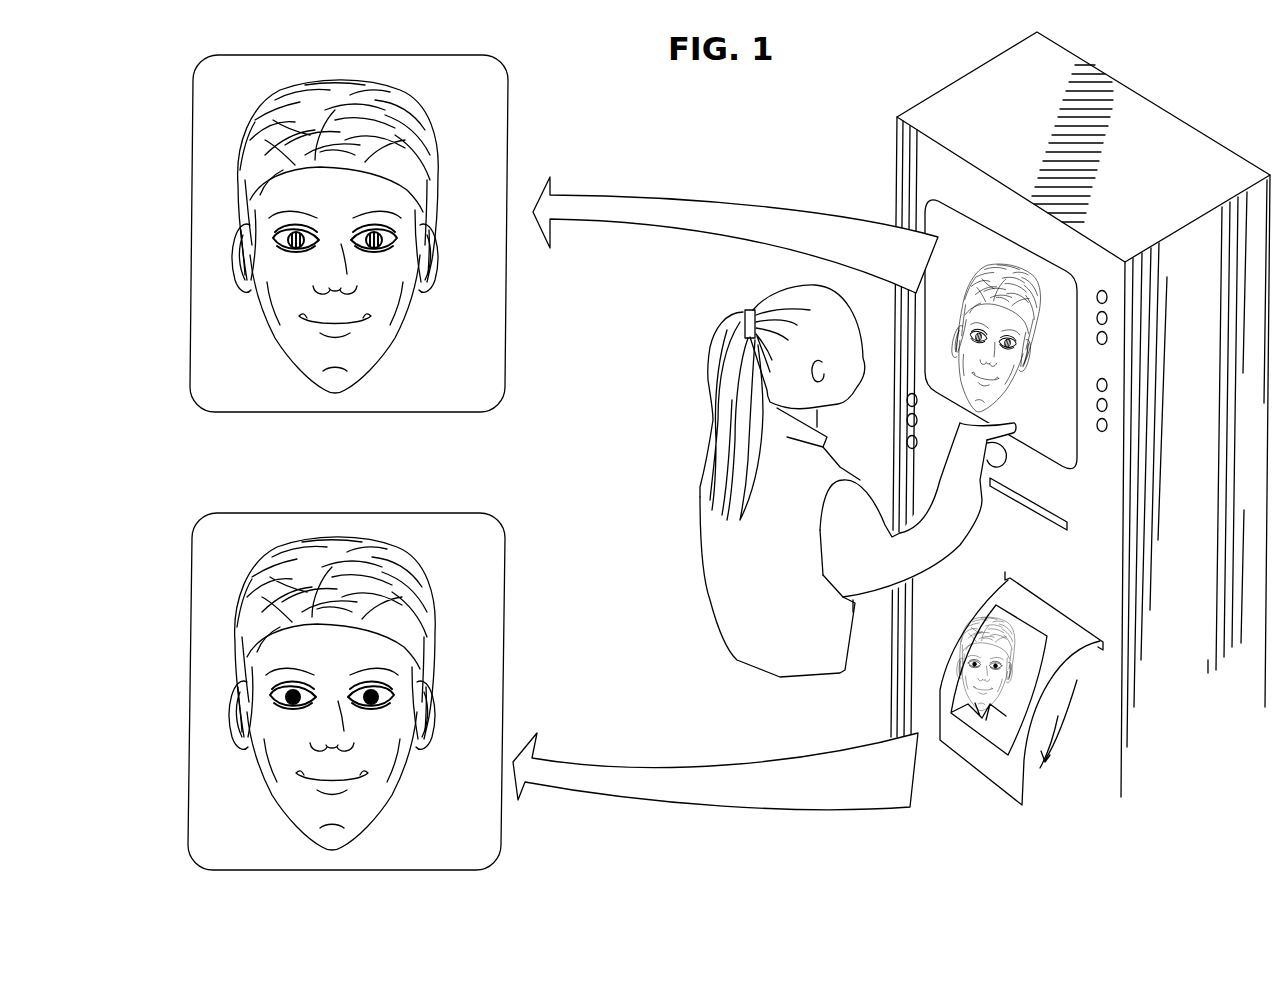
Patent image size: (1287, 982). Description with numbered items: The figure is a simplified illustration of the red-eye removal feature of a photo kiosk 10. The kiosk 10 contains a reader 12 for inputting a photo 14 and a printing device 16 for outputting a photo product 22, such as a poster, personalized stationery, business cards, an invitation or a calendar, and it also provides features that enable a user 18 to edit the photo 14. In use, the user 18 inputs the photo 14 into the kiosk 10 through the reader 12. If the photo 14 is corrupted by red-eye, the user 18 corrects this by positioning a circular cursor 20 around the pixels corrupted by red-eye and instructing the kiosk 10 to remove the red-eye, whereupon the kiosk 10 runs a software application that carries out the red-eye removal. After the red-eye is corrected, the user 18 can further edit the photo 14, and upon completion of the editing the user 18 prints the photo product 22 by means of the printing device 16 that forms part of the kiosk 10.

The photo kiosk 10 is at (1157, 110).
The reader 12 is at (1056, 512).
The photo 14 is at (493, 123).
The printing device 16 is at (1068, 605).
The user 18 is at (723, 605).
The circular cursor 20 is at (366, 252).
The photo product 22 is at (487, 582).